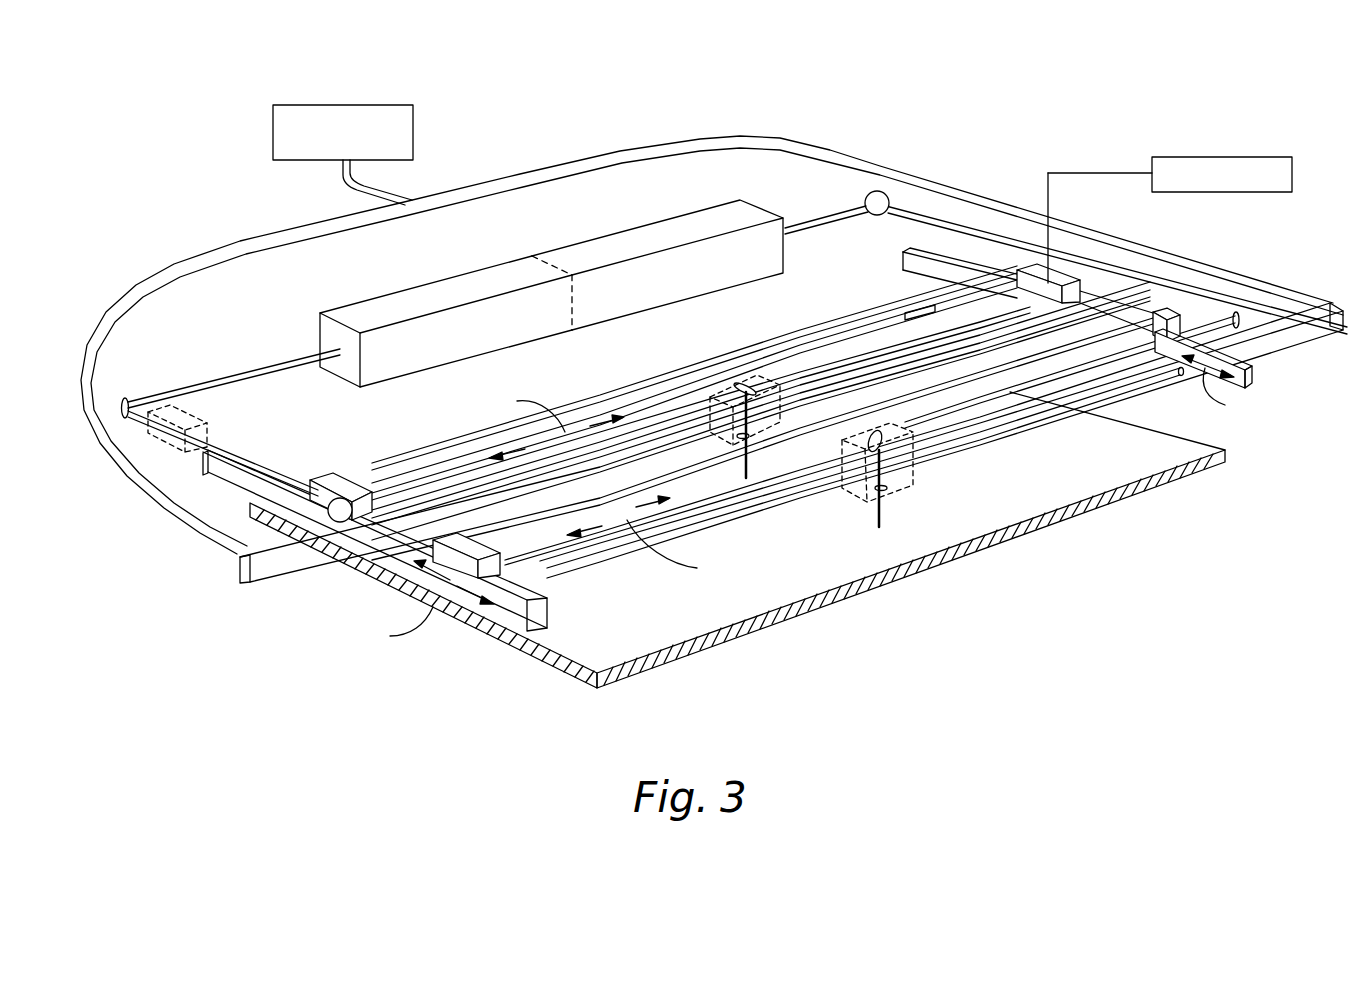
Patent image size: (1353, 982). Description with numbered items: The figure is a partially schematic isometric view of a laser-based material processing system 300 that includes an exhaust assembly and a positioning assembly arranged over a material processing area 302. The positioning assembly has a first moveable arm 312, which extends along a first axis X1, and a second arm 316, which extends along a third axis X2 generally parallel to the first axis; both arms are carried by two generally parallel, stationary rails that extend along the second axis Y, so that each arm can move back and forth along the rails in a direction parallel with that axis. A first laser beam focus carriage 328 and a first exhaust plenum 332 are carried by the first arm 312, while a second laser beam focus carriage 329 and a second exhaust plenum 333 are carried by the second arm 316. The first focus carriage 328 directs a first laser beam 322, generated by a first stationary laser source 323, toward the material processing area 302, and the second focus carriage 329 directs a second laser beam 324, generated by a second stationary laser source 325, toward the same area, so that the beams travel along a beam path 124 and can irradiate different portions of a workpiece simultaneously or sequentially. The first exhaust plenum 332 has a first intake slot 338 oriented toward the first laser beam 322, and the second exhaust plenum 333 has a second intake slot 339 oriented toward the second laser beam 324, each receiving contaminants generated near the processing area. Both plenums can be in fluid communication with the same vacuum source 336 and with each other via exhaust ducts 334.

The laser-based material processing system 300 is at (1115, 118).
The material processing area 302 is at (1037, 494).
The first moveable arm 312 is at (637, 413).
The second arm 316 is at (985, 397).
The first laser beam 322 is at (718, 420).
The second laser beam 324 is at (882, 522).
The first laser beam focus carriage 328 is at (760, 378).
The second laser beam focus carriage 329 is at (852, 478).
The first exhaust plenum 332 is at (840, 377).
The first intake slot 338 is at (927, 360).
The second exhaust plenum 333 is at (1123, 377).
The second intake slot 339 is at (1070, 407).
The exhaust ducts 334 is at (850, 162).
The vacuum source 336 is at (298, 103).
The first stationary laser source 323 is at (418, 297).
The second stationary laser source 325 is at (639, 238).
The beam path 124 is at (253, 456).